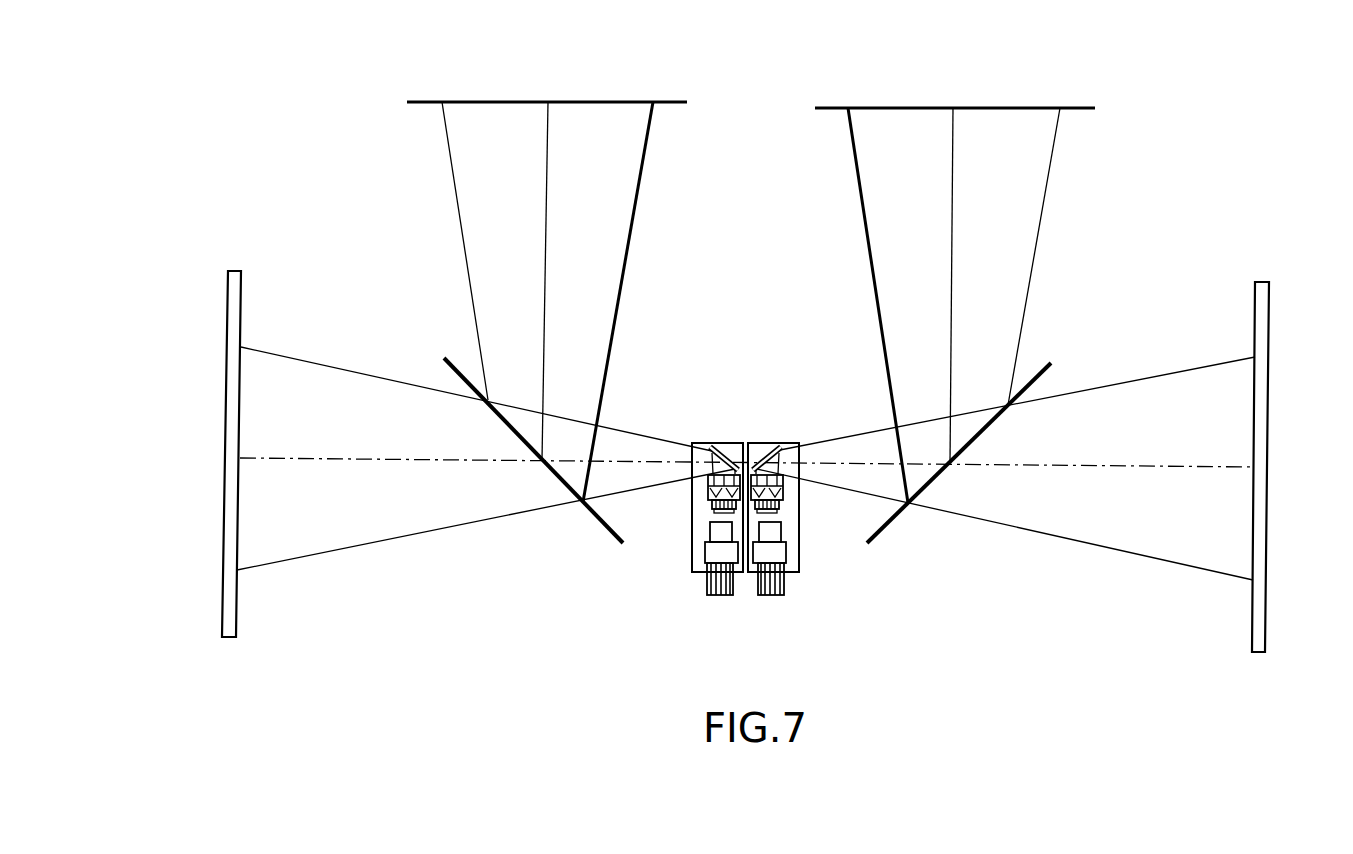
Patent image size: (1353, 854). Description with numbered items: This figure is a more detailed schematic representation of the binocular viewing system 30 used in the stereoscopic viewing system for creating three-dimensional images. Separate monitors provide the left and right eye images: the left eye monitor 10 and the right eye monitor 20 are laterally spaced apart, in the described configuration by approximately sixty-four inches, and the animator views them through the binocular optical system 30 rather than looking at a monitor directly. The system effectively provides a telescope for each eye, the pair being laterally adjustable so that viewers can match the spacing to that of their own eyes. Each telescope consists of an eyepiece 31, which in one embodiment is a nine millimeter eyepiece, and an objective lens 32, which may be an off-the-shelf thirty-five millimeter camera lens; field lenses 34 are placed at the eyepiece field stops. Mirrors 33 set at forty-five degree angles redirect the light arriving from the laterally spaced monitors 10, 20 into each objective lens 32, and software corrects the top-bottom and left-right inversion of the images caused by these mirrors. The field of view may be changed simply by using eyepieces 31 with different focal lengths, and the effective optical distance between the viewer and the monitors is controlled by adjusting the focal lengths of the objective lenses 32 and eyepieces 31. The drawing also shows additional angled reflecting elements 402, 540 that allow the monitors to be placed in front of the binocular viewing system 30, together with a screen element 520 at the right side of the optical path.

The left eye monitor 10 is at (548, 102).
The right eye monitor 20 is at (953, 108).
The binocular optical system 30 is at (698, 588).
The eyepiece 31 is at (707, 558).
The objective lens 32 is at (707, 503).
The mirror 33 is at (732, 442).
The field lens 34 is at (708, 538).
The first reflecting mirror 402 is at (533, 450).
The second screen 520 is at (1290, 467).
The second reflecting mirror 540 is at (961, 453).